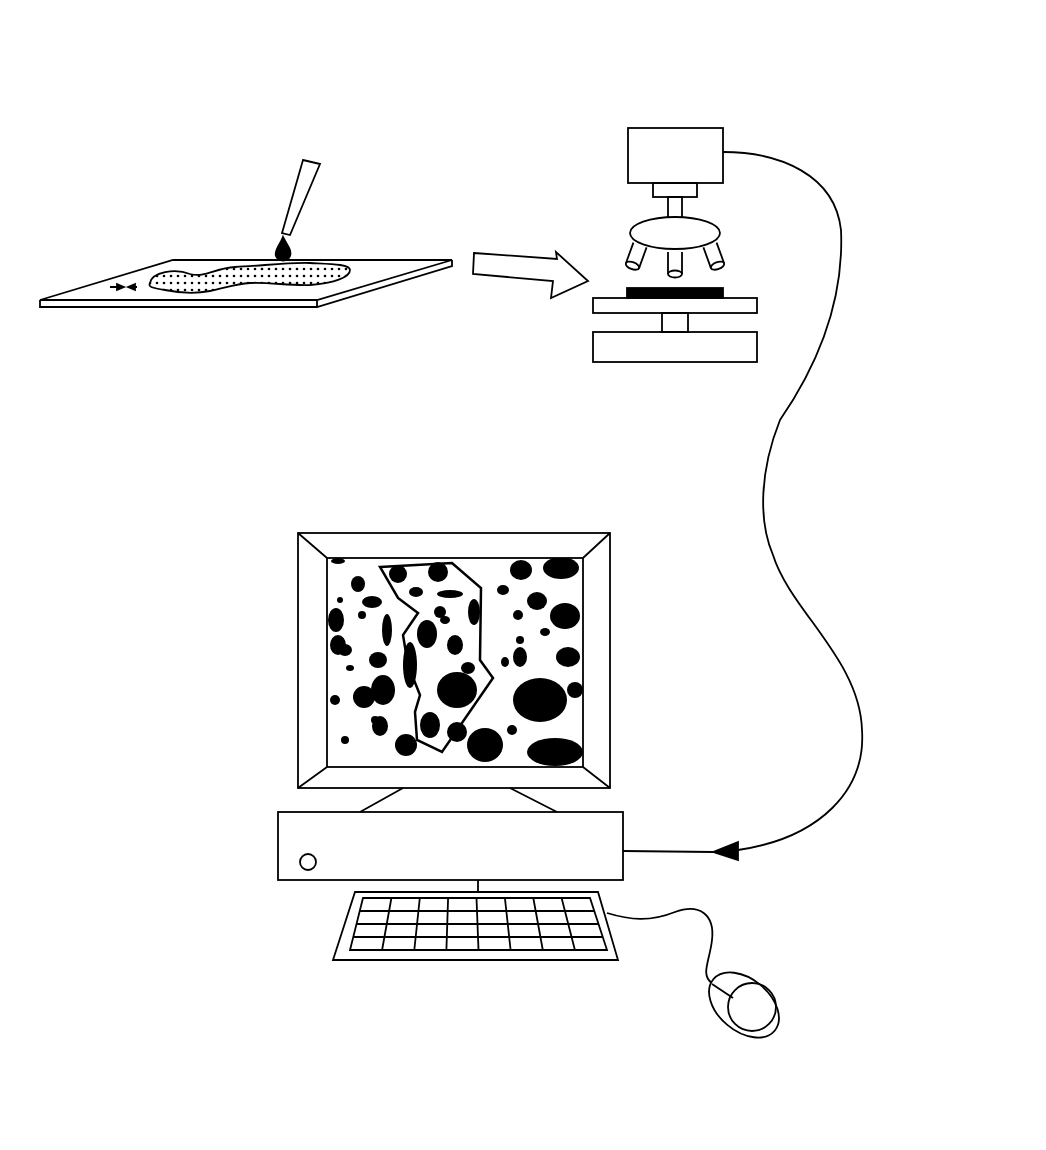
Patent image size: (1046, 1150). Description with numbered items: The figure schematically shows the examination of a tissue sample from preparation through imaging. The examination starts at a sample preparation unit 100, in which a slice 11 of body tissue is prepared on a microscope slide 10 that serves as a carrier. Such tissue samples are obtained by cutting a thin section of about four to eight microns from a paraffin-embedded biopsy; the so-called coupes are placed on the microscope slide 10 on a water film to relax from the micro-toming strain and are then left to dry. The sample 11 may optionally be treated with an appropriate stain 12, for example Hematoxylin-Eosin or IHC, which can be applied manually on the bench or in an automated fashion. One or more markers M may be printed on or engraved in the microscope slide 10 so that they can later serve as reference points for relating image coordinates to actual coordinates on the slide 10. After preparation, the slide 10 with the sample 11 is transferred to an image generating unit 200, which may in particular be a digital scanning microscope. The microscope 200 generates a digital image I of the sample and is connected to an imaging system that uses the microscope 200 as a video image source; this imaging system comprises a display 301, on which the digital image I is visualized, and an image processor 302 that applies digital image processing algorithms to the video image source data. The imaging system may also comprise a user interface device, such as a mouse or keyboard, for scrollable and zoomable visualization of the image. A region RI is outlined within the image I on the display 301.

The sample preparation unit 100 is at (147, 165).
The image generating unit 200 is at (608, 106).
The microscope slide 10 is at (103, 306).
The slice of body tissue 11 is at (247, 283).
The stain 12 is at (279, 250).
The marker M is at (126, 281).
The display 301 is at (613, 620).
The image processor 302 is at (623, 827).
The digital image I is at (348, 667).
The region of interest RI is at (423, 710).